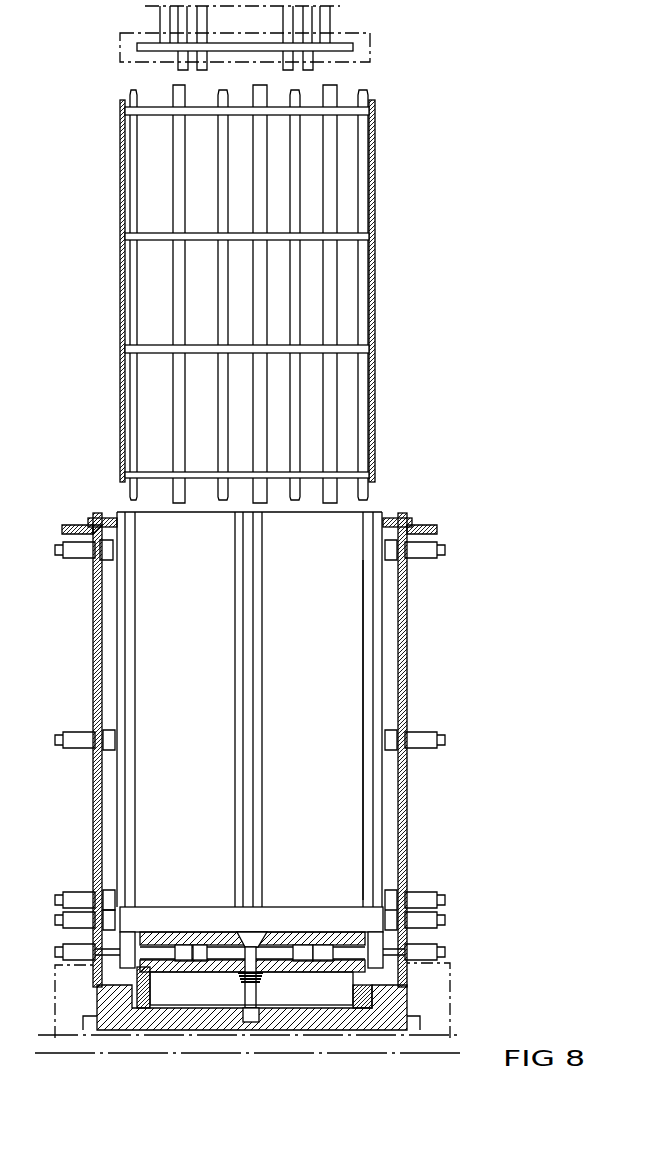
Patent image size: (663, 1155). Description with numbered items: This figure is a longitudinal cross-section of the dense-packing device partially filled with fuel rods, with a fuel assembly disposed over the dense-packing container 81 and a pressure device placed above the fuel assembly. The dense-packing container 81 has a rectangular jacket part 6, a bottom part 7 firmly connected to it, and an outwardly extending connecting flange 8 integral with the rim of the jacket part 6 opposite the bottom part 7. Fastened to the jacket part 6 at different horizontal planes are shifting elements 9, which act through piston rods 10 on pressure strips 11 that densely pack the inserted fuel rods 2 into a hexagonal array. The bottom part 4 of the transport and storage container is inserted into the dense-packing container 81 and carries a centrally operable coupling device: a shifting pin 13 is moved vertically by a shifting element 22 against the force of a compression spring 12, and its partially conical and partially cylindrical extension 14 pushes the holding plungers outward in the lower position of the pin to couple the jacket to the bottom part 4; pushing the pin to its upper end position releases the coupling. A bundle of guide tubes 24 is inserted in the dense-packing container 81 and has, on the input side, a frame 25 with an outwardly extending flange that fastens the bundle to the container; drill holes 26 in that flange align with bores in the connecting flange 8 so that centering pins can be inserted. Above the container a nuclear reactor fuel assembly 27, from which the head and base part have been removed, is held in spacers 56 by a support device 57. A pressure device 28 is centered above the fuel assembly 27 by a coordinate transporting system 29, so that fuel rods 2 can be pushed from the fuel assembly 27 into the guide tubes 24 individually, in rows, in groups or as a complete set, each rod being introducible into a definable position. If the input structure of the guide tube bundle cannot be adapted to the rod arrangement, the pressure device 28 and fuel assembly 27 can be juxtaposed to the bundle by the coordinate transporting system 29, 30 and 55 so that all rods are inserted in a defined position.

The fuel rods 2 is at (130, 167).
The bottom part 4 is at (148, 987).
The jacket part 6 is at (95, 647).
The bottom part 7 is at (172, 1024).
The connecting flange 8 is at (62, 528).
The shifting elements 9 is at (425, 744).
The piston rods 10 is at (97, 733).
The pressure strips 11 is at (395, 730).
The compression spring 12 is at (246, 976).
The shifting pin 13 is at (258, 978).
The extension 14 is at (250, 935).
The shifting element 22 is at (262, 1022).
The guide tubes 24 is at (368, 682).
The frame 25 is at (115, 518).
The drill holes 26 is at (92, 518).
The nuclear reactor fuel assembly 27 is at (253, 496).
The pressure device 28 is at (340, 18).
The coordinate transporting system 29 is at (372, 50).
The coordinate transporting system 30 is at (120, 1046).
The coordinate transporting system 55 is at (436, 992).
The spacers 56 is at (152, 350).
The support device 57 is at (120, 190).
The dense-packing container 81 is at (412, 593).